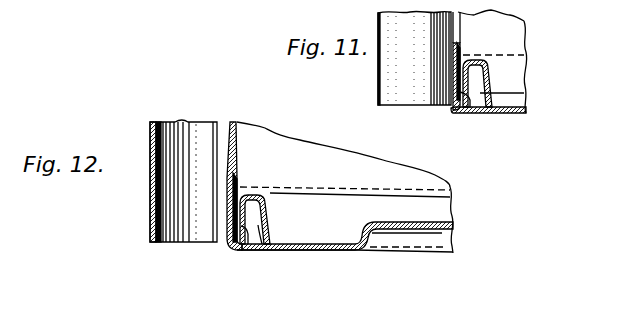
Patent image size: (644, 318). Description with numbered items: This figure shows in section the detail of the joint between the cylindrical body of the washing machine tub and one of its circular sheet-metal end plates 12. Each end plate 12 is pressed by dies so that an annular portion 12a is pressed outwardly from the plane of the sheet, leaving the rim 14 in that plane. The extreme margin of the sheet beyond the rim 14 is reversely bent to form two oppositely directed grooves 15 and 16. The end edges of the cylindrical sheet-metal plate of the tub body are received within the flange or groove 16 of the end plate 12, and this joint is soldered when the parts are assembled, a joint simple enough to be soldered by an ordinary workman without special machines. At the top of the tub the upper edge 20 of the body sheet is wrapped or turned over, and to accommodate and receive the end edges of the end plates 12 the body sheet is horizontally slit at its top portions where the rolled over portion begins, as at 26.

In FIG. 11, the end plate 12 is at (513, 114).
In FIG. 12, the end plate 12 is at (422, 254).
In FIG. 12, the annular portion 12a is at (447, 233).
In FIG. 11, the rim 14 is at (508, 112).
In FIG. 12, the rim 14 is at (337, 251).
In FIG. 11, the groove 15 is at (524, 93).
In FIG. 12, the groove 15 is at (262, 244).
In FIG. 11, the groove 16 is at (470, 108).
In FIG. 12, the groove 16 is at (248, 244).
In FIG. 11, the upper edge 20 is at (378, 88).
In FIG. 12, the upper edge 20 is at (150, 212).
In FIG. 11, the rolled over portion 26 is at (462, 48).
In FIG. 12, the rolled over portion 26 is at (237, 182).